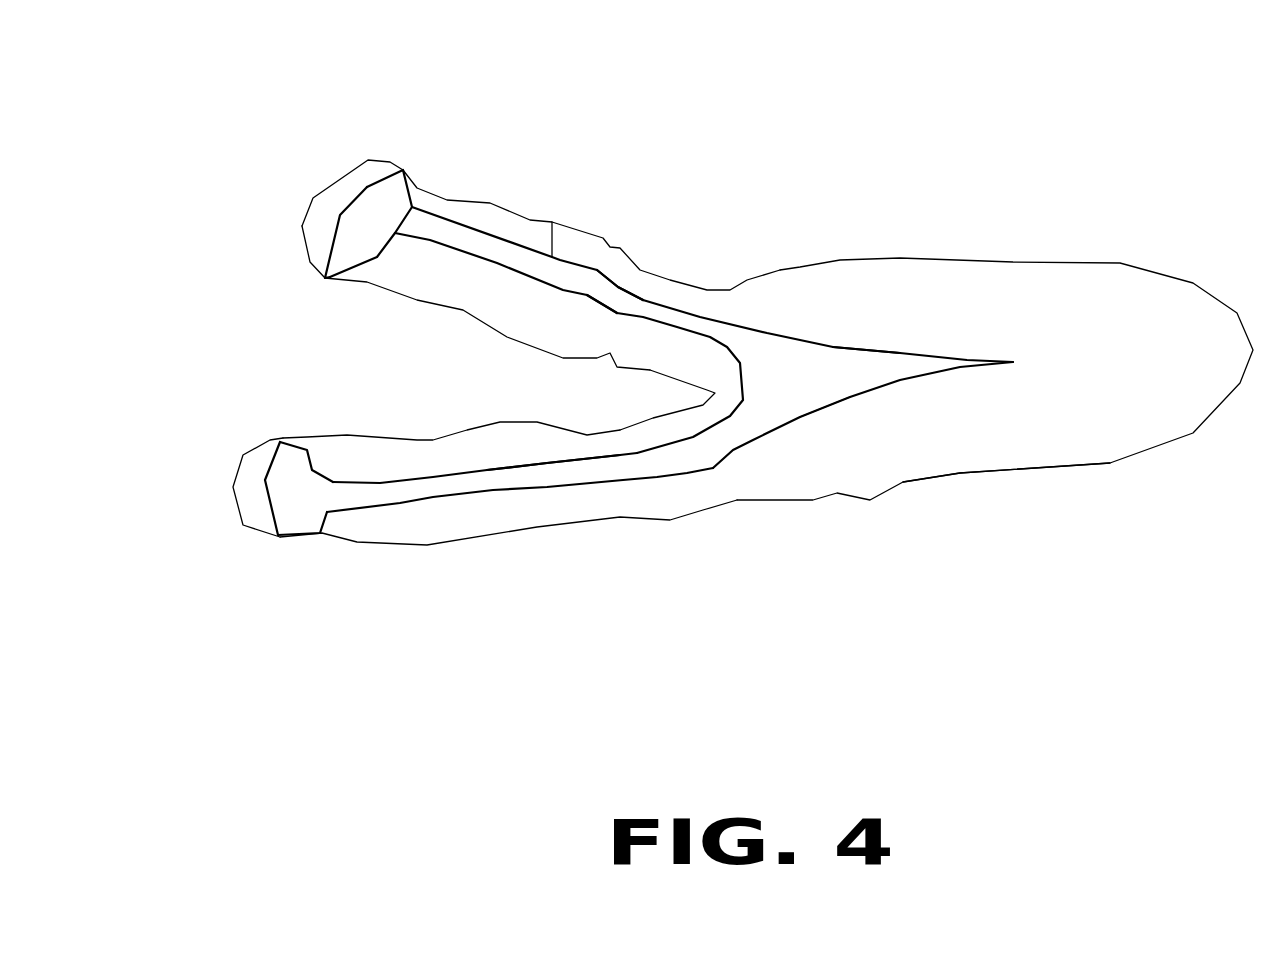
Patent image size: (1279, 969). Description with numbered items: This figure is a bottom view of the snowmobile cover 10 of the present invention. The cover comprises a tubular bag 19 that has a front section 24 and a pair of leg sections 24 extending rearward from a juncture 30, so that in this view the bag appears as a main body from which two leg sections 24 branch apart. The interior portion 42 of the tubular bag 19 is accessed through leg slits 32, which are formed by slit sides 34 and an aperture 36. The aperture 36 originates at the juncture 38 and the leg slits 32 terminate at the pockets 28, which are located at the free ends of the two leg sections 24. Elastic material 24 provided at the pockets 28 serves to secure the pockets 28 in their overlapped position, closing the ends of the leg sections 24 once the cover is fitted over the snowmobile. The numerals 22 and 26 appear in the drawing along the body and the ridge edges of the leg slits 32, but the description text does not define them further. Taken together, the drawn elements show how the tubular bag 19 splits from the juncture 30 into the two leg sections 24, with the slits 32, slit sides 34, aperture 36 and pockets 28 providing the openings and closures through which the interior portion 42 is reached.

The snowmobile cover 10 is at (994, 110).
The tubular bag 19 is at (953, 476).
The main body portion 22 is at (1063, 278).
The leg sections 24 is at (495, 202).
The ridge edge 26 is at (618, 307).
The pockets 28 is at (333, 192).
The juncture 30 is at (715, 388).
The leg slits 32 is at (612, 258).
The slit sides 34 is at (537, 257).
The aperture 36 is at (955, 363).
The juncture 38 is at (1013, 362).
The interior portion 42 is at (848, 372).